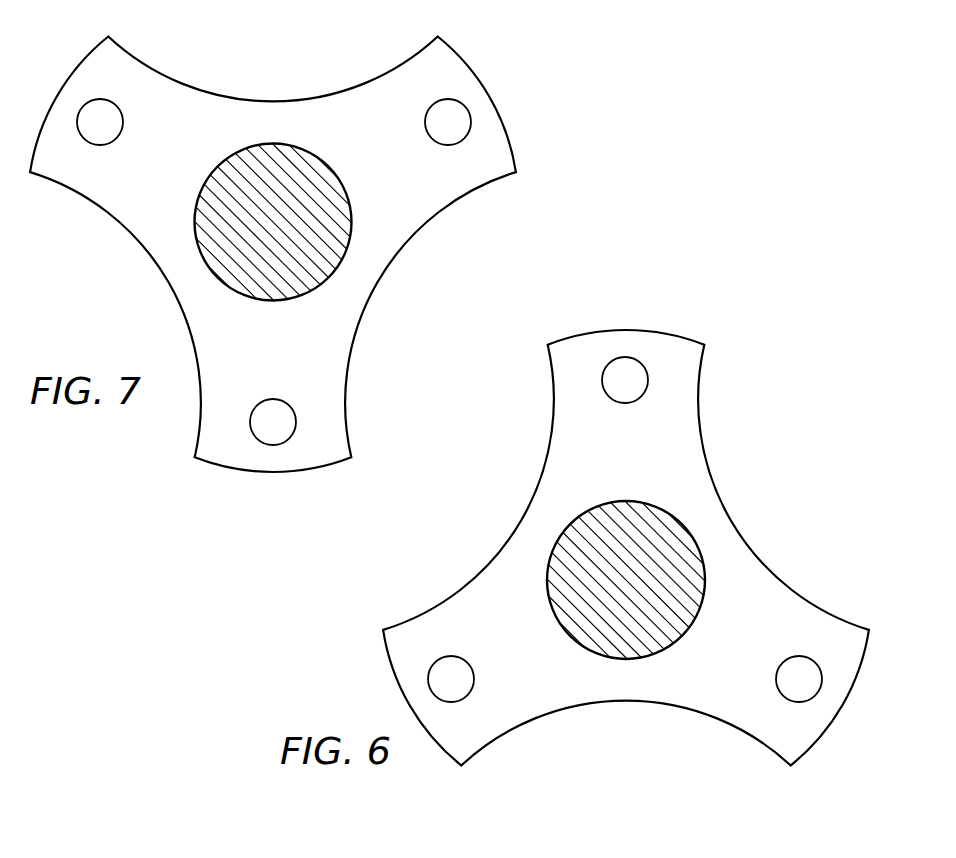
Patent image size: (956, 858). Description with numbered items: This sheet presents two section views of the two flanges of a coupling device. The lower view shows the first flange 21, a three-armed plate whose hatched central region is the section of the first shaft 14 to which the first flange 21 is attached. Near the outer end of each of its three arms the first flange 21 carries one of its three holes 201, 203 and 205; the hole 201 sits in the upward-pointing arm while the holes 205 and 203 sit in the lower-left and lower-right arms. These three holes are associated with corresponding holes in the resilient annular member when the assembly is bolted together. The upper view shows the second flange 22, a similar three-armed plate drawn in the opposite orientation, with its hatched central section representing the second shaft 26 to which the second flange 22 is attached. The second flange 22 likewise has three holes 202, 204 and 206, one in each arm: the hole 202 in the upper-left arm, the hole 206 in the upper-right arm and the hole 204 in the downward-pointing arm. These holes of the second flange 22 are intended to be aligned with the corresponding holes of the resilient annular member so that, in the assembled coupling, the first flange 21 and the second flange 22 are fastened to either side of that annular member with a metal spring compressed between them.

In FIG. 6, the first shaft 14 is at (617, 512).
In FIG. 6, the first flange 21 is at (711, 504).
In FIG. 7, the second flange 22 is at (120, 206).
In FIG. 7, the second shaft 26 is at (270, 160).
In FIG. 6, the hole 201 is at (622, 368).
In FIG. 7, the hole 202 is at (88, 115).
In FIG. 6, the hole 203 is at (785, 674).
In FIG. 7, the hole 204 is at (285, 422).
In FIG. 6, the hole 205 is at (438, 674).
In FIG. 7, the hole 206 is at (459, 119).